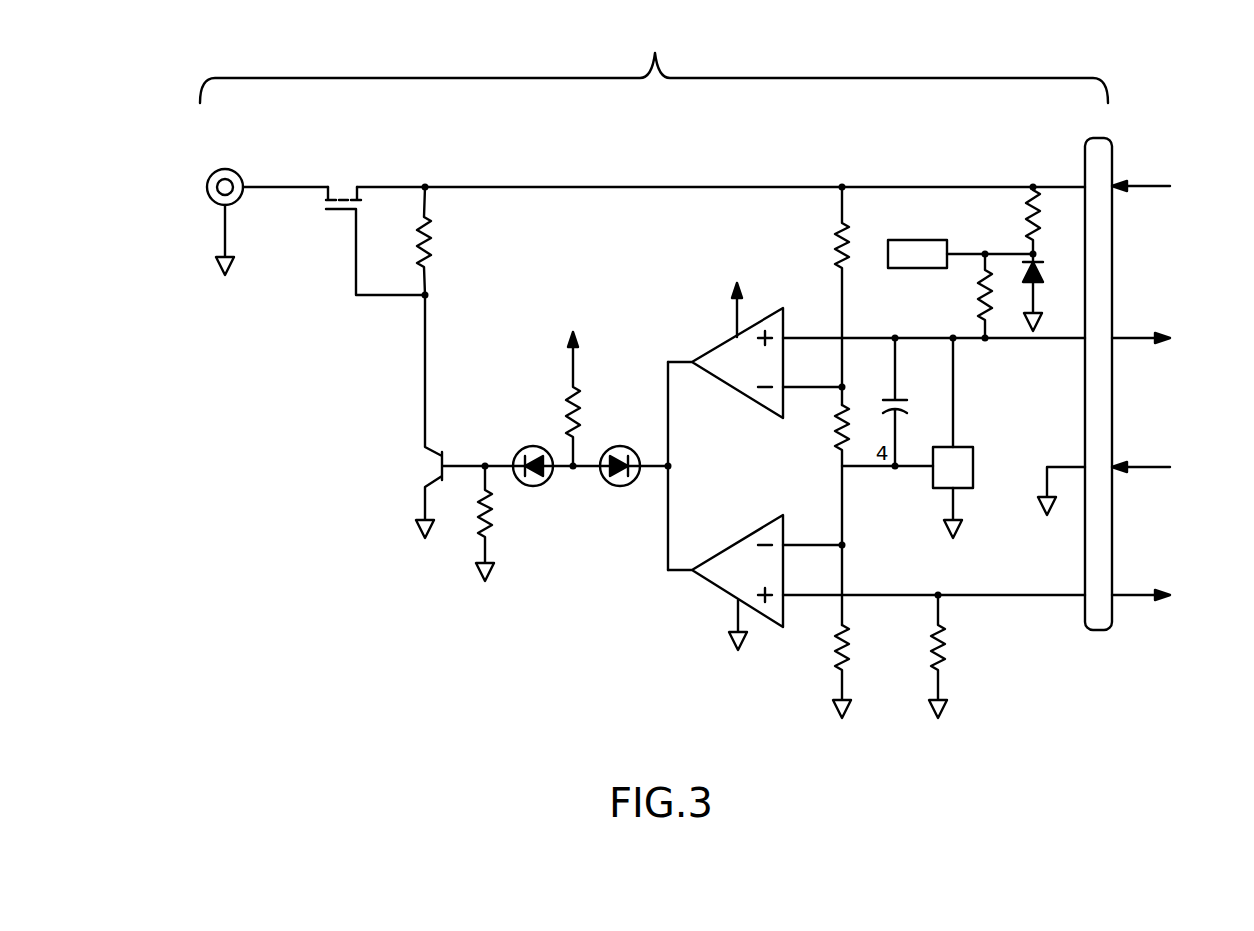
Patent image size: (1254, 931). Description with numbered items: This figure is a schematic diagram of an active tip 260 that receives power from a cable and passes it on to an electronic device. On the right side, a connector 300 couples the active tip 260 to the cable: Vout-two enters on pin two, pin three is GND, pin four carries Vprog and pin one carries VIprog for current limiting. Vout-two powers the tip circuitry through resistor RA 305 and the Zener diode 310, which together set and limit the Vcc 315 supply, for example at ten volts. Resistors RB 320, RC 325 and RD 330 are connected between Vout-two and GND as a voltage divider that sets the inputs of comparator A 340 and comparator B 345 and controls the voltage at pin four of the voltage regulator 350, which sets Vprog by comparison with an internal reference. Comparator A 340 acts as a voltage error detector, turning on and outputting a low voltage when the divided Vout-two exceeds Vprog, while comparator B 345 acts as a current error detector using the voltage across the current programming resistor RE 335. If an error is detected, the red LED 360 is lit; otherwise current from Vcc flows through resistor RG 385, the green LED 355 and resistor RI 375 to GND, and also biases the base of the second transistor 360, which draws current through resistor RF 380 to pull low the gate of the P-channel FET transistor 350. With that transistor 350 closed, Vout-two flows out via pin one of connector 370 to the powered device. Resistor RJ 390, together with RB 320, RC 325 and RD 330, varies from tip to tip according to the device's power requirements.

The active tip 260 is at (654, 61).
The connector 300 is at (1110, 145).
The resistor RA 305 is at (1020, 215).
The Zener diode VR1 310 is at (1112, 270).
The Vcc 315 is at (912, 240).
The resistor RB 320 is at (838, 248).
The resistor RC 325 is at (835, 430).
The resistor RD 330 is at (835, 652).
The resistor RE 335 is at (945, 650).
The comparator A 340 is at (700, 345).
The comparator B 345 is at (707, 583).
The transistor Q1 350 is at (348, 160).
The green LED DS1 355 is at (554, 497).
The red LED DS2 360 is at (392, 468).
The connector 370 is at (208, 200).
The resistor RI 375 is at (480, 517).
The resistor RF 380 is at (433, 240).
The resistor RG 385 is at (565, 412).
The resistor RJ 390 is at (978, 298).